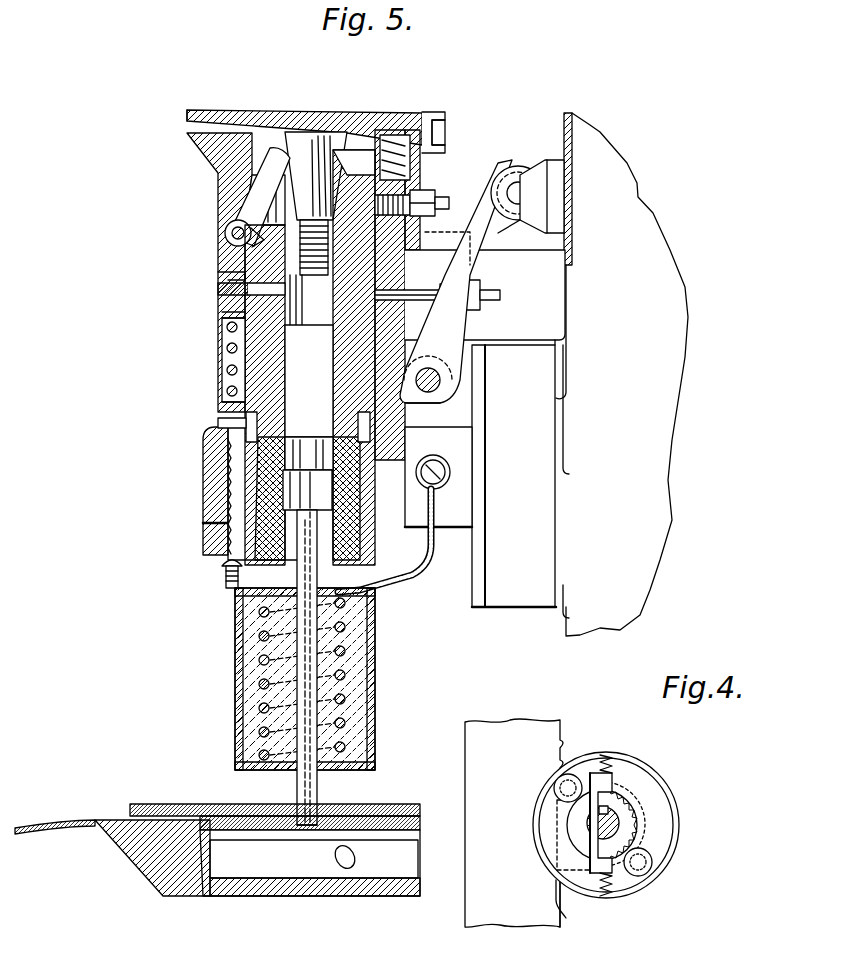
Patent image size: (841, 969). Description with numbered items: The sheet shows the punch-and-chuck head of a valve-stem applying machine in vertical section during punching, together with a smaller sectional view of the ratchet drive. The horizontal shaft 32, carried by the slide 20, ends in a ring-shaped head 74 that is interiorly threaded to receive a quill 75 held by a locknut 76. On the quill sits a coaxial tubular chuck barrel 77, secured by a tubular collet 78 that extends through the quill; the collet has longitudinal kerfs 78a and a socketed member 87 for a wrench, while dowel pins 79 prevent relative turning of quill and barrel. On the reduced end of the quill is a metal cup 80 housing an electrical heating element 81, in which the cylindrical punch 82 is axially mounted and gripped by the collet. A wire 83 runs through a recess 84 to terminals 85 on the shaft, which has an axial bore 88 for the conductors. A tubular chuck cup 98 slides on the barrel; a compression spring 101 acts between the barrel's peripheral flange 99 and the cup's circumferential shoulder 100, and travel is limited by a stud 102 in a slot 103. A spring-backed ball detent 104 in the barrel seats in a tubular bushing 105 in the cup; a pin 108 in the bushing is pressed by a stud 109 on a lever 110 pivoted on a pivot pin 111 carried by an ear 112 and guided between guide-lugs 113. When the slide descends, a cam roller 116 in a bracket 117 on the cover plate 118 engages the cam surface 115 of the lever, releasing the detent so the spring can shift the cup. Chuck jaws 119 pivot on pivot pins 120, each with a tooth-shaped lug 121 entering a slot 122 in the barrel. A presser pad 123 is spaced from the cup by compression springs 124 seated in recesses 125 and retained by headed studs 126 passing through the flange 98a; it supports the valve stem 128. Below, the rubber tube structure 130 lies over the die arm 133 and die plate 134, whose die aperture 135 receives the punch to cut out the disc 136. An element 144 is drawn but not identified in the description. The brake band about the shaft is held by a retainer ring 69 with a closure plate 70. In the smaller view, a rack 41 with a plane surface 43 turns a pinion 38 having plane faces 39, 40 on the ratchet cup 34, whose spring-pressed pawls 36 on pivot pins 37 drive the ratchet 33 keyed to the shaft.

In FIG. 5, the slide 20 is at (592, 126).
In FIG. 5, the cover plate 118 is at (569, 113).
In FIG. 5, the rubber valve stem 128 is at (296, 110).
In FIG. 5, the presser pad 123 is at (187, 112).
In FIG. 5, the circumferential flange 98a is at (445, 130).
In FIG. 5, the headed studs 126 is at (437, 112).
In FIG. 5, the slot 122 is at (290, 278).
In FIG. 5, the chuck jaws 119 is at (258, 185).
In FIG. 5, the pivot pins 120 is at (226, 233).
In FIG. 5, the tooth-shaped lug 121 is at (250, 241).
In FIG. 5, the ring-shaped head 74 is at (205, 485).
In FIG. 5, the tubular collet 78 is at (280, 455).
In FIG. 5, the kerfs 78a is at (278, 505).
In FIG. 5, the socketed member 87 is at (250, 440).
In FIG. 5, the locknut 76 is at (205, 540).
In FIG. 5, the quill 75 is at (228, 566).
In FIG. 5, the chuck cup 98 is at (222, 358).
In FIG. 5, the circumferential shoulder 100 is at (222, 330).
In FIG. 5, the compression spring 101 is at (222, 378).
In FIG. 5, the chuck barrel 77 is at (240, 311).
In FIG. 5, the slot 103 is at (222, 274).
In FIG. 5, the stud 102 is at (222, 287).
In FIG. 5, the dowel pins 79 is at (245, 412).
In FIG. 5, the peripheral flange 99 is at (218, 420).
In FIG. 5, the compression springs 124 is at (408, 150).
In FIG. 5, the recesses 125 is at (405, 170).
In FIG. 5, the bolt 144 is at (438, 190).
In FIG. 5, the pin 108 is at (455, 283).
In FIG. 5, the stud 109 is at (500, 297).
In FIG. 5, the lever 110 is at (500, 163).
In FIG. 5, the cam roller 116 is at (518, 166).
In FIG. 5, the bracket 117 is at (553, 160).
In FIG. 5, the cam surface 115 is at (472, 222).
In FIG. 5, the guide-lug 113 is at (450, 240).
In FIG. 5, the tubular bushing 105 is at (420, 315).
In FIG. 5, the ball detent 104 is at (457, 345).
In FIG. 5, the ear 112 is at (452, 375).
In FIG. 5, the pivot pin 111 is at (442, 392).
In FIG. 5, the axial bore 88 is at (418, 460).
In FIG. 5, the terminals 85 is at (450, 470).
In FIG. 5, the recess 84 is at (360, 582).
In FIG. 5, the wire 83 is at (408, 590).
In FIG. 5, the shaft 32 is at (452, 530).
In FIG. 4, the shaft 32 is at (620, 825).
In FIG. 5, the closure plate 70 is at (476, 608).
In FIG. 5, the retainer ring 69 is at (512, 600).
In FIG. 5, the metal cup 80 is at (237, 640).
In FIG. 5, the electrical heating element 81 is at (262, 689).
In FIG. 5, the punch 82 is at (296, 777).
In FIG. 5, the rubber tube structure 130 is at (398, 808).
In FIG. 5, the die arm 133 is at (142, 875).
In FIG. 5, the die plate 134 is at (74, 813).
In FIG. 5, the die aperture 135 is at (306, 830).
In FIG. 5, the disc of tube material 136 is at (341, 868).
In FIG. 4, the rack 41 is at (484, 915).
In FIG. 4, the plane surface 43 is at (562, 918).
In FIG. 4, the ratchet cup 34 is at (642, 775).
In FIG. 4, the pinion 38 is at (642, 802).
In FIG. 4, the plane face 39 is at (535, 822).
In FIG. 4, the ratchet 33 is at (590, 845).
In FIG. 4, the pawls 36 is at (600, 755).
In FIG. 4, the pivot pins 37 is at (554, 788).
In FIG. 4, the plane face 40 is at (564, 890).